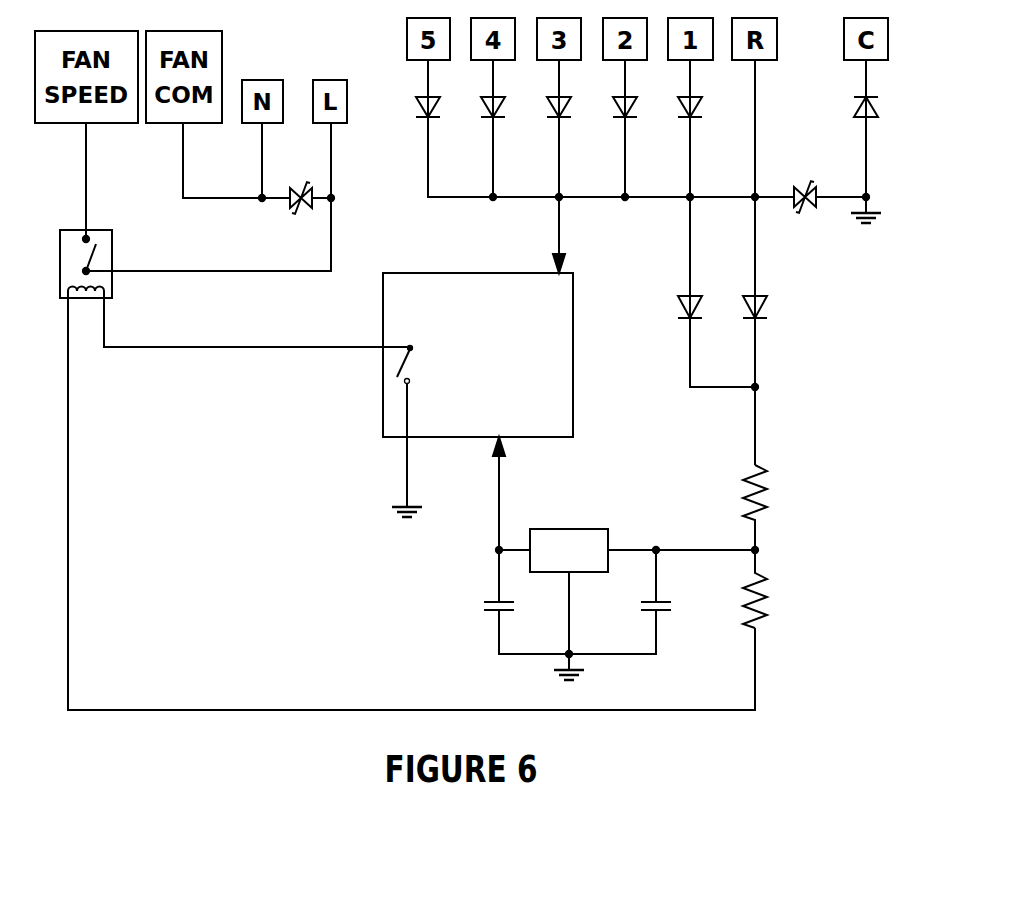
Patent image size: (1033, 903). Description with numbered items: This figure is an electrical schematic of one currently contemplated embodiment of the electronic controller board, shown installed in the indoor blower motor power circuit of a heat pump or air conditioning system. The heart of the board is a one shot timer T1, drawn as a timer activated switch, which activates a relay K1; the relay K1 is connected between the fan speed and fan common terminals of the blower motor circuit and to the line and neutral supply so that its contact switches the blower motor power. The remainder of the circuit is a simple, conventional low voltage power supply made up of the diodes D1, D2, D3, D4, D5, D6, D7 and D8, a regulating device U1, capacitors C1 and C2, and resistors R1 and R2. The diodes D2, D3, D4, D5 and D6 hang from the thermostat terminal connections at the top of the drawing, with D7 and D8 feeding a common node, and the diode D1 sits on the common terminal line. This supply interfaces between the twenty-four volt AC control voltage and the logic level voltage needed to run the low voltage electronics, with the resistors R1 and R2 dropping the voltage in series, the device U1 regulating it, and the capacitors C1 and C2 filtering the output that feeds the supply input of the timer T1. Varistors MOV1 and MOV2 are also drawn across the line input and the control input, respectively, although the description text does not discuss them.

The diode D1 is at (843, 109).
The diode D2 is at (708, 109).
The diode D3 is at (642, 109).
The diode D4 is at (576, 109).
The diode D5 is at (510, 109).
The diode D6 is at (445, 109).
The diode D7 is at (774, 308).
The diode D8 is at (667, 308).
The metal oxide varistor MOV1 is at (273, 214).
The metal oxide varistor MOV2 is at (810, 183).
The relay K1 is at (82, 248).
The one shot timer T1 is at (478, 395).
The power supply component U1 is at (569, 591).
The capacitor C1 is at (620, 602).
The capacitor C2 is at (511, 602).
The resistor R1 is at (773, 507).
The resistor R2 is at (774, 589).